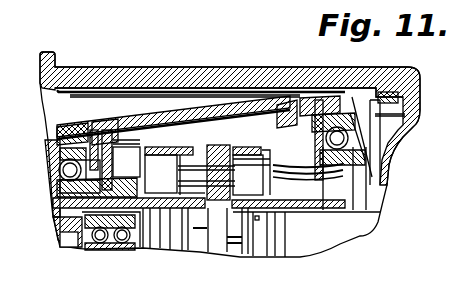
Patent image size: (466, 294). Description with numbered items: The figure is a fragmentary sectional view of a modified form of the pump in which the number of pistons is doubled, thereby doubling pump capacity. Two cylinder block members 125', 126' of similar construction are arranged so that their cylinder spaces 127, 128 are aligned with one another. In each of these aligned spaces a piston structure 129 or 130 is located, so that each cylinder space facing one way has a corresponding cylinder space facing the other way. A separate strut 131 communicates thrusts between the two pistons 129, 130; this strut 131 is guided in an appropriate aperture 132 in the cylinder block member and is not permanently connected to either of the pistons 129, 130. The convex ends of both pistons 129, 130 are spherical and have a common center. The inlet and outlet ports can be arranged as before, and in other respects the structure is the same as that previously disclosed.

The cylinder block member 125' is at (173, 102).
The cylinder block member 126' is at (322, 113).
The cylinder space 127 is at (152, 207).
The cylinder space 128 is at (285, 145).
The piston structure 129 is at (152, 165).
The piston structure 130 is at (258, 182).
The strut 131 is at (203, 178).
The aperture 132 is at (212, 172).